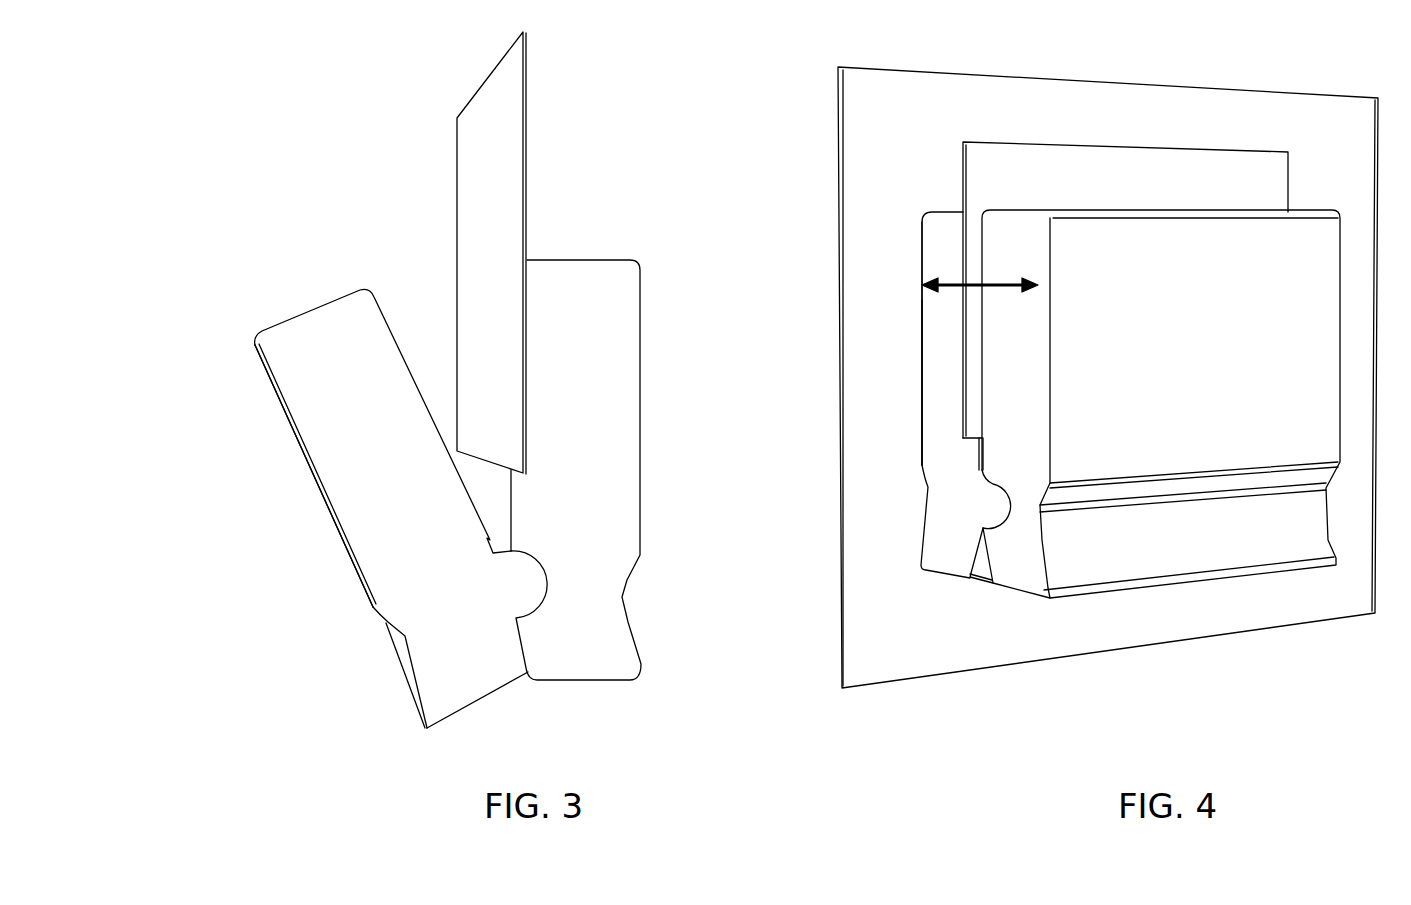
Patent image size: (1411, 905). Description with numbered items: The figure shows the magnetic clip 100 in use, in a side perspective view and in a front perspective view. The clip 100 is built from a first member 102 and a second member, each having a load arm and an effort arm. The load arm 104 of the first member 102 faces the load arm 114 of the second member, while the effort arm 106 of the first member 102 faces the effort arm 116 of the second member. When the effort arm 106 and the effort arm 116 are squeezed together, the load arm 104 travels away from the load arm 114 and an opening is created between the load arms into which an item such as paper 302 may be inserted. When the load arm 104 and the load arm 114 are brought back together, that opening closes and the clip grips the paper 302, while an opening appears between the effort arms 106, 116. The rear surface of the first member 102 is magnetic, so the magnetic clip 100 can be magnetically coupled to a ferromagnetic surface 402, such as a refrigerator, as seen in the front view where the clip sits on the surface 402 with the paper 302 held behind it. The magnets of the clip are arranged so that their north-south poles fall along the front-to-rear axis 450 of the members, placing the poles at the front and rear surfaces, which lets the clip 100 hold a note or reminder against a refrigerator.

In FIG. 3, the magnetic clip 100 is at (305, 306).
In FIG. 4, the magnetic clip 100 is at (936, 207).
In FIG. 4, the first member 102 is at (937, 365).
In FIG. 3, the load arm 104 is at (270, 398).
In FIG. 4, the load arm 104 is at (952, 395).
In FIG. 3, the effort arm 106 is at (395, 690).
In FIG. 4, the effort arm 106 is at (981, 555).
In FIG. 3, the load arm 114 is at (647, 288).
In FIG. 4, the load arm 114 is at (1161, 404).
In FIG. 3, the effort arm 116 is at (650, 675).
In FIG. 3, the paper 302 is at (435, 152).
In FIG. 4, the paper 302 is at (1125, 290).
In FIG. 4, the ferromagnetic surface 402 is at (832, 70).
In FIG. 4, the front-to-rear axis 450 is at (1030, 290).